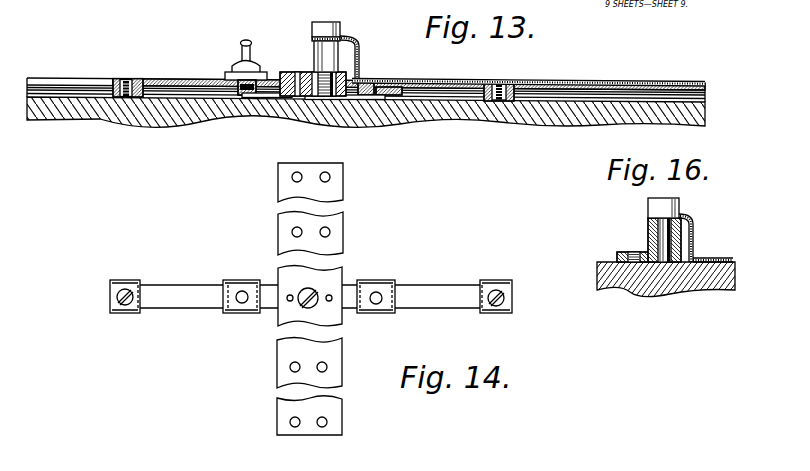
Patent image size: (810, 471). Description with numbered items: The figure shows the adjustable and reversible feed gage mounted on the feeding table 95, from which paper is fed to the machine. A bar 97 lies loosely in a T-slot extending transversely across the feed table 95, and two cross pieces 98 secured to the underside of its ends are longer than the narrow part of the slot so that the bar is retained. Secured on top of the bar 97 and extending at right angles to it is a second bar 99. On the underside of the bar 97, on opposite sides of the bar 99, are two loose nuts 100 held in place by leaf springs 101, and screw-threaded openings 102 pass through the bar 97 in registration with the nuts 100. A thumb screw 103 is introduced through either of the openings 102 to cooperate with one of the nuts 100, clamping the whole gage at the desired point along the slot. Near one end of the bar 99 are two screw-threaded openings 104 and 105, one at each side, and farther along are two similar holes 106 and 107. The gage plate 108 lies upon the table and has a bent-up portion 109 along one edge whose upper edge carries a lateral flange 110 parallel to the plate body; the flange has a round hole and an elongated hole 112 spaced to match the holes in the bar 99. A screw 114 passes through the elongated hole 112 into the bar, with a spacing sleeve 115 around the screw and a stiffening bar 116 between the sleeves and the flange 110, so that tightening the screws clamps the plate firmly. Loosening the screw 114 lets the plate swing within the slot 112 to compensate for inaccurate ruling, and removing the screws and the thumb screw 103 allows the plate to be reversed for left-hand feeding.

In FIG. 13, the feeding table 95 is at (100, 117).
In FIG. 16, the feeding table 95 is at (700, 283).
In FIG. 13, the bar 97 is at (172, 78).
In FIG. 14, the bar 97 is at (190, 285).
In FIG. 13, the cross pieces 98 is at (135, 98).
In FIG. 14, the cross pieces 98 is at (125, 280).
In FIG. 13, the second bar 99 is at (300, 73).
In FIG. 14, the second bar 99 is at (338, 270).
In FIG. 13, the loose nuts 100 is at (242, 96).
In FIG. 13, the leaf springs 101 is at (298, 99).
In FIG. 13, the screw-threaded openings 102 is at (240, 84).
In FIG. 13, the thumb screw 103 is at (244, 62).
In FIG. 14, the screw-threaded opening 104 is at (330, 177).
In FIG. 14, the screw-threaded opening 105 is at (292, 177).
In FIG. 14, the hole 106 is at (330, 232).
In FIG. 14, the hole 107 is at (292, 232).
In FIG. 13, the gage plate 108 is at (462, 81).
In FIG. 16, the gage plate 108 is at (728, 241).
In FIG. 13, the bent-up portion 109 is at (360, 52).
In FIG. 16, the bent-up portion 109 is at (694, 230).
In FIG. 13, the lateral flange 110 is at (342, 37).
In FIG. 16, the lateral flange 110 is at (693, 217).
In FIG. 16, the elongated hole 112 is at (682, 216).
In FIG. 13, the screw 114 is at (313, 25).
In FIG. 16, the screw 114 is at (648, 205).
In FIG. 13, the spacing sleeves 115 is at (338, 58).
In FIG. 13, the stiffening bar 116 is at (313, 40).
In FIG. 16, the stiffening bar 116 is at (648, 222).